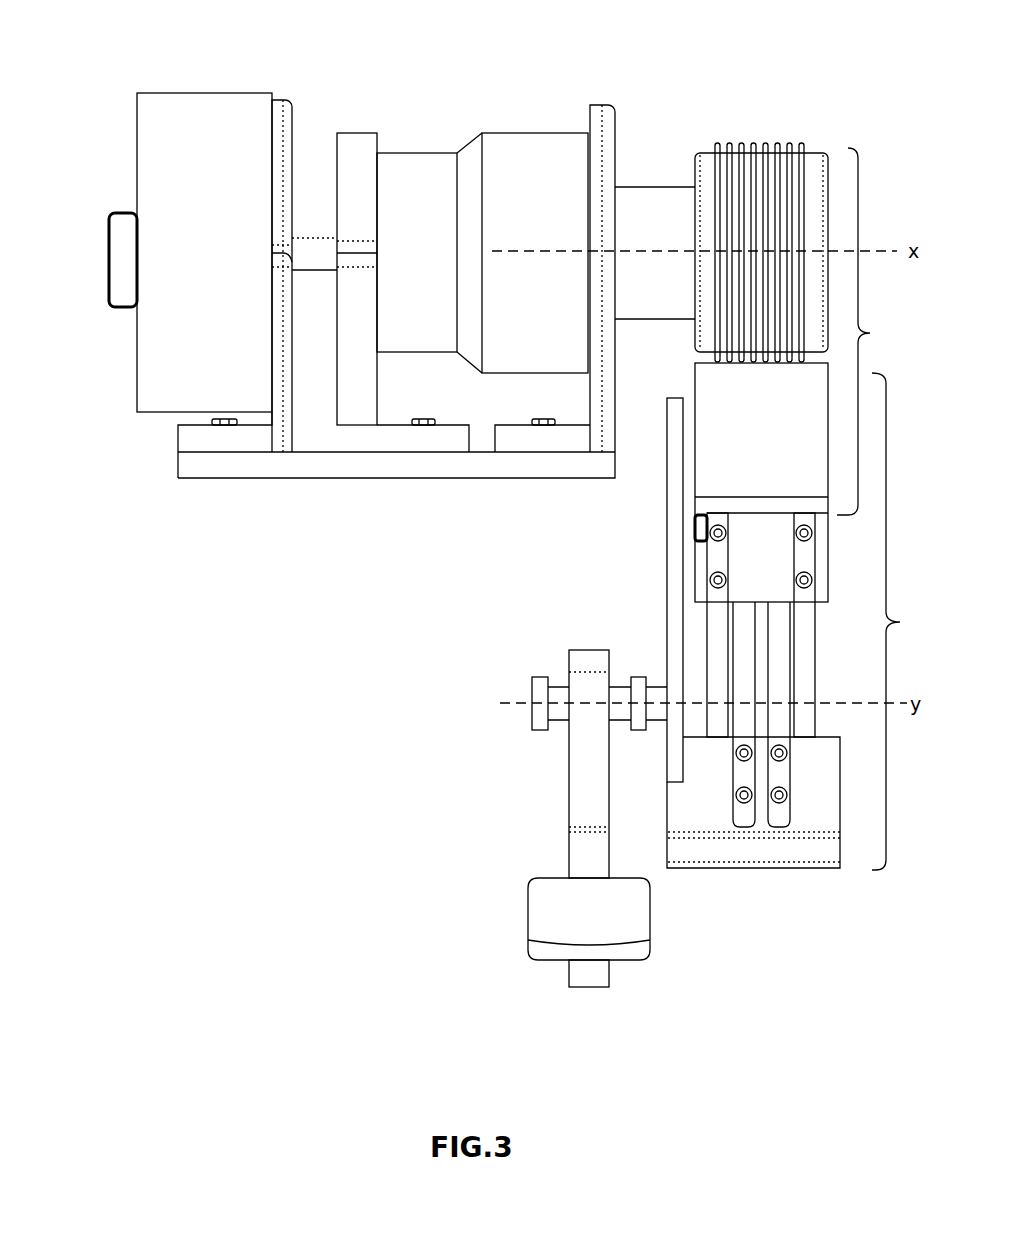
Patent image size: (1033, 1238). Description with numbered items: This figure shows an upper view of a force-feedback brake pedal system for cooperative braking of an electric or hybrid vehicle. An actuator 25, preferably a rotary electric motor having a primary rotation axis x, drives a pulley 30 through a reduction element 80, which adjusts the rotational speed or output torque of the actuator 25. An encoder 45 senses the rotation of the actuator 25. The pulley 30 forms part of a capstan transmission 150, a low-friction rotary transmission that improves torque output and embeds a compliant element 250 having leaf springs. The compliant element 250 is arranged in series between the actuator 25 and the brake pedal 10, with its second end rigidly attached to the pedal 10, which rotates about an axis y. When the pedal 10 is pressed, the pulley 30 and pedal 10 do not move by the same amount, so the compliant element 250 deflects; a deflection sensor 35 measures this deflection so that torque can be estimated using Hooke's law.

The actuator 25 is at (147, 120).
The encoder 45 is at (117, 252).
The reduction element 80 is at (555, 133).
The sector pulley, capstan, or gear 30 is at (778, 163).
The sensor 35 is at (695, 523).
The brake pedal 10 is at (547, 914).
The capstan transmission 150 is at (886, 331).
The compliant element 250 is at (910, 621).